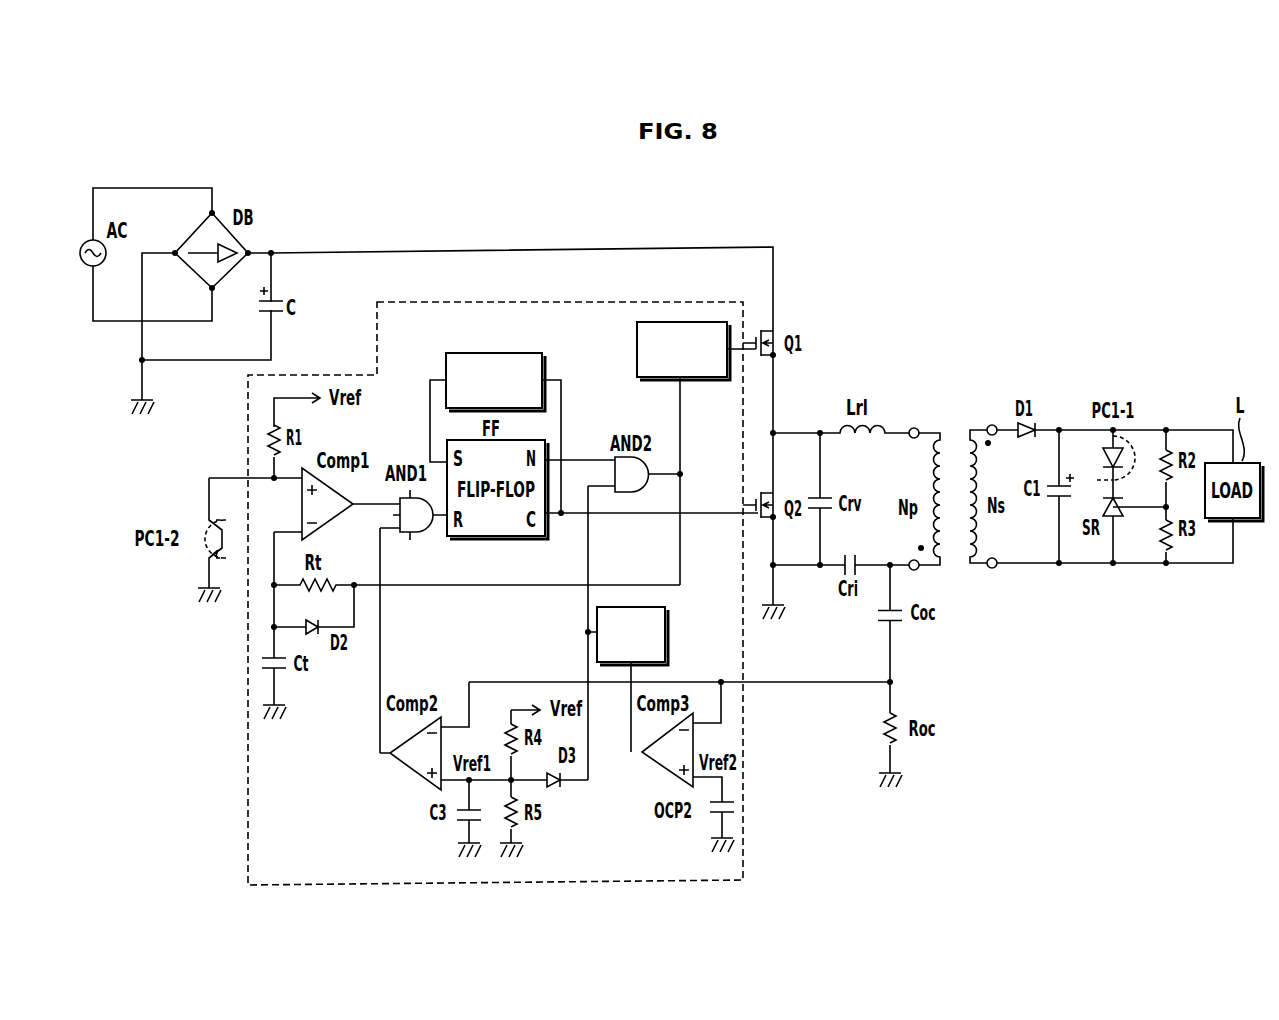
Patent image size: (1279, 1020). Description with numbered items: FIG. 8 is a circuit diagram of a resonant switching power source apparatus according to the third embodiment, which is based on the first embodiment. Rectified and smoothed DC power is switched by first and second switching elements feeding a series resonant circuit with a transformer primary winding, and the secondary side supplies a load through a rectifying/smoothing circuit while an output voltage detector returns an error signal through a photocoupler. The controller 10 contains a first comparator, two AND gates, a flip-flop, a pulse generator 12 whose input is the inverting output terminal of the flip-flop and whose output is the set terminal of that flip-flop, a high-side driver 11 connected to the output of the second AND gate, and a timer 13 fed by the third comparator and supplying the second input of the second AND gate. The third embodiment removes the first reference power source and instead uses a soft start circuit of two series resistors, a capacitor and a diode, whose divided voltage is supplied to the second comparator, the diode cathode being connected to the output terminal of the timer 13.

The controller 10 is at (396, 301).
The high-side driver 11 is at (636, 355).
The pulse generator 12 is at (512, 352).
The timer 13 is at (667, 630).